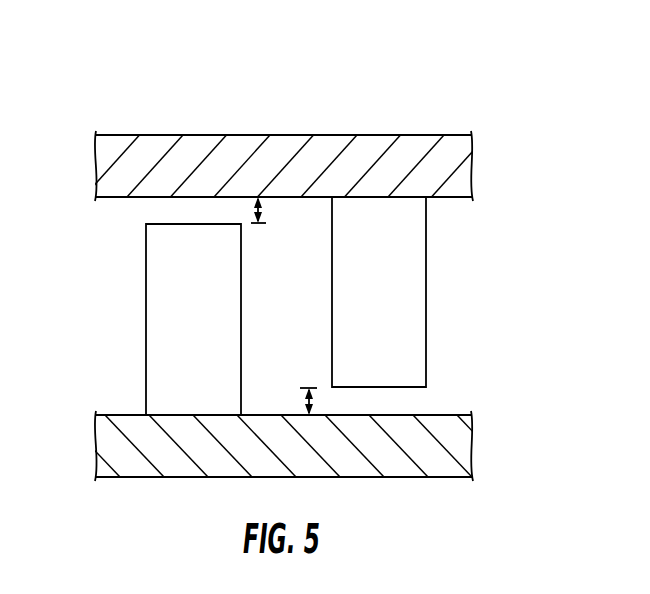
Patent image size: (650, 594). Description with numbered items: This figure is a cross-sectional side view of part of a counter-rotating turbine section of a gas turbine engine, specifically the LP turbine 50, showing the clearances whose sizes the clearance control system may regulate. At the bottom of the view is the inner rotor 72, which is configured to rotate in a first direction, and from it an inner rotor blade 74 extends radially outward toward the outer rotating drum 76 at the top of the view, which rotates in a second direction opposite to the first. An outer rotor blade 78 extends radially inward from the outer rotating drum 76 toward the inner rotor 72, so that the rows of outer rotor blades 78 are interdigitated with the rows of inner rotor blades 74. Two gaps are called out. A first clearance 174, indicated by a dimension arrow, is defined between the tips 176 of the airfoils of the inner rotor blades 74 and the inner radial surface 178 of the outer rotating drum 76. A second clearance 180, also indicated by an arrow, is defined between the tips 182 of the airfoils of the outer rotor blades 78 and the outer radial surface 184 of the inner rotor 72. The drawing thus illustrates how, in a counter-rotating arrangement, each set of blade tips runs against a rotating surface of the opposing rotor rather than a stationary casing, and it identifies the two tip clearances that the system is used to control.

The LP turbine 50 is at (110, 55).
The inner rotor 72 is at (173, 477).
The inner rotor blades 74 is at (145, 295).
The outer rotating drum 76 is at (312, 135).
The outer rotor blades 78 is at (426, 295).
The first clearance 174 is at (262, 215).
The tips 176 is at (205, 224).
The inner radial surface 178 is at (447, 197).
The second clearance 180 is at (305, 400).
The tips 182 is at (361, 387).
The outer radial surface 184 is at (448, 415).